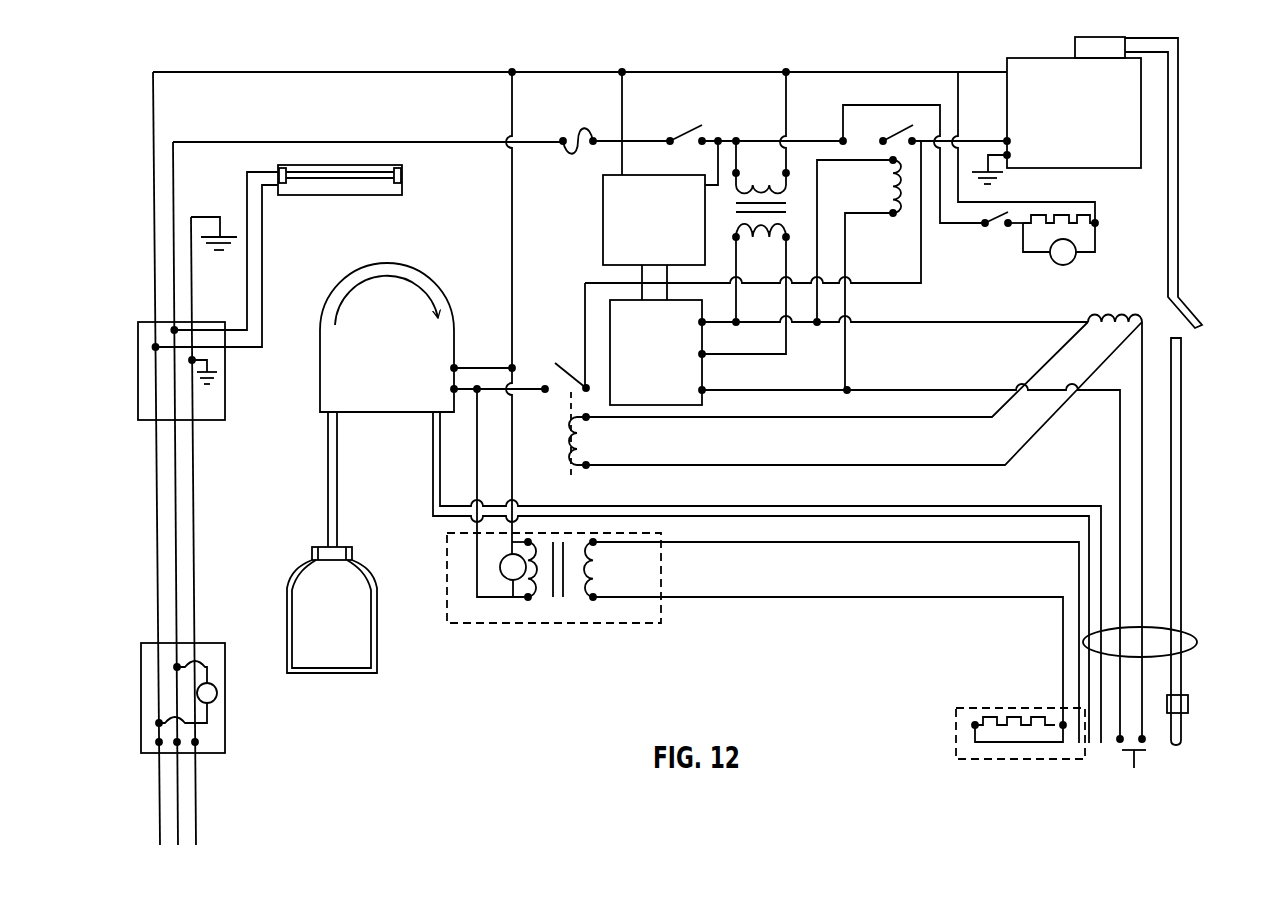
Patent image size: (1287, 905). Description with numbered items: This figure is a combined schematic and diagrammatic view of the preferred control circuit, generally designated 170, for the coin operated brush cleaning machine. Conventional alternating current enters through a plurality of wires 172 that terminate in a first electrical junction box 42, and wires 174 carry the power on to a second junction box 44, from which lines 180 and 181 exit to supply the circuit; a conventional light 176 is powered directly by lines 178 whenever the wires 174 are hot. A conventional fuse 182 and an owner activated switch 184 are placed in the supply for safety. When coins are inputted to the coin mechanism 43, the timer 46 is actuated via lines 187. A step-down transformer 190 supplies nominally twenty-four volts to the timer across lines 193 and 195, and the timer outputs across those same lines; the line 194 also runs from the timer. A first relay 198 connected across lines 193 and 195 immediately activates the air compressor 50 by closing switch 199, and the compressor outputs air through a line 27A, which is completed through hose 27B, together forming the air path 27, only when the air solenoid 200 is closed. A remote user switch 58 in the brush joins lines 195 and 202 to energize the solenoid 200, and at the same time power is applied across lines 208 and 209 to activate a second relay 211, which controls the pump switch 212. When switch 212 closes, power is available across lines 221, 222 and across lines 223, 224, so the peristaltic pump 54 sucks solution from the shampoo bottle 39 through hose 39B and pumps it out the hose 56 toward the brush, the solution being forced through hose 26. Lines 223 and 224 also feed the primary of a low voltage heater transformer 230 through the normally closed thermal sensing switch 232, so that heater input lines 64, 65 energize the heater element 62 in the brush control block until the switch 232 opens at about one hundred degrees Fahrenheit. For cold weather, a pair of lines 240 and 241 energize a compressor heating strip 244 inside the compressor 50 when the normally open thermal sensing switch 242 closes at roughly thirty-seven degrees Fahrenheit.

The hose 26 is at (1197, 640).
The air line 27 is at (1230, 292).
The air line 27A is at (1180, 204).
The hose 27B is at (1177, 479).
The bottle 39 is at (332, 610).
The hose 39B is at (338, 471).
The junction box 42 is at (217, 662).
The coin acceptor 43 is at (615, 238).
The junction box 44 is at (217, 393).
The timer 46 is at (657, 352).
The air compressor 50 is at (1056, 110).
The peristaltic pump 54 is at (388, 337).
The hose 56 is at (850, 513).
The remote user operated switch 58 is at (1153, 765).
The heater element 62 is at (966, 706).
The heater input line 64 is at (826, 543).
The heater input line 65 is at (880, 598).
The control 170 is at (721, 61).
The wires 172 is at (180, 780).
The wires 174 is at (178, 462).
The light 176 is at (389, 198).
The lines 178 is at (248, 263).
The line 180 is at (477, 73).
The line 181 is at (445, 145).
The fuse 182 is at (582, 137).
The owner activated switch 184 is at (689, 131).
The lines 187 is at (663, 273).
The step-down transformer 190 is at (775, 166).
The line 193 is at (707, 325).
The conductor 194 is at (748, 355).
The line 195 is at (922, 390).
The first relay 198 is at (897, 223).
The switch 199 is at (891, 128).
The air solenoid 200 is at (1141, 303).
The line 202 is at (1140, 424).
The line 208 is at (877, 421).
The line 209 is at (860, 463).
The second relay 211 is at (596, 432).
The pump switch 212 is at (572, 371).
The line 221 is at (497, 362).
The line 222 is at (499, 392).
The line 223 is at (477, 483).
The line 224 is at (513, 458).
The heater transformer 230 is at (540, 606).
The thermal sensing switch 232 is at (469, 596).
The line 240 is at (956, 225).
The line 241 is at (995, 202).
The thermal sensing switch 242 is at (973, 229).
The compressor heating strip 244 is at (1081, 212).